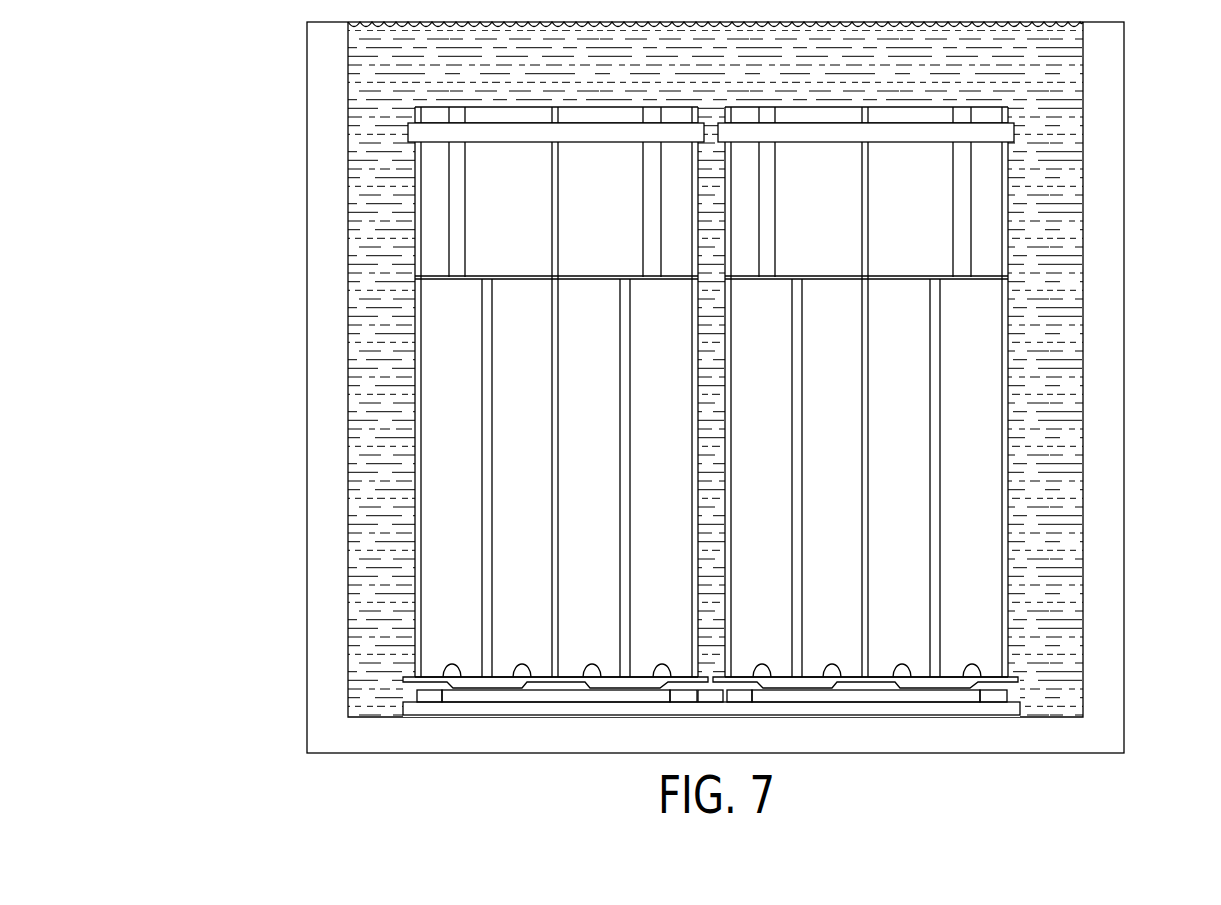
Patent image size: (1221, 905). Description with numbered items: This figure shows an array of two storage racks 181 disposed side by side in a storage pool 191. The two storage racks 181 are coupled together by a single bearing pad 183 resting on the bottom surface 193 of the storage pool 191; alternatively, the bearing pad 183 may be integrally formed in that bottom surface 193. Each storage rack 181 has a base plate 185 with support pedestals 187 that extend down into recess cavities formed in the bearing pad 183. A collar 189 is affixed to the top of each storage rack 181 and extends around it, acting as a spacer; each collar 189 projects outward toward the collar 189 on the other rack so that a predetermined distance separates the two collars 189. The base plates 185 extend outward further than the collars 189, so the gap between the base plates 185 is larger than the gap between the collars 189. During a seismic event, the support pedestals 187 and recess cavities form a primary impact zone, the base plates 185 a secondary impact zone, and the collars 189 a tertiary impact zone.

The storage rack 181 is at (432, 234).
The bearing pad 183 is at (447, 710).
The base plate 185 is at (403, 678).
The support pedestal 187 is at (418, 693).
The collar 189 is at (408, 136).
The storage pool 191 is at (1072, 113).
The bottom surface 193 is at (1053, 717).